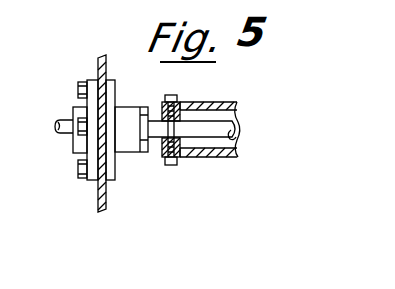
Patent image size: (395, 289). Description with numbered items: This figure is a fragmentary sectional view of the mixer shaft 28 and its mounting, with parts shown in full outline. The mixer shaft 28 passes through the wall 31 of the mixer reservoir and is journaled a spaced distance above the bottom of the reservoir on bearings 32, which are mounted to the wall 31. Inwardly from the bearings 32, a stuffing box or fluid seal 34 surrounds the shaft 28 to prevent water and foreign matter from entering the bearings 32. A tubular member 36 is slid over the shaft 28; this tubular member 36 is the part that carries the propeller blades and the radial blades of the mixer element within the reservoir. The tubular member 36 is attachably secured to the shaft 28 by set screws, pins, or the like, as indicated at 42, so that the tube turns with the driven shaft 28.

The mixer shaft 28 is at (237, 138).
The wall 31 is at (100, 200).
The bearings 32 is at (77, 105).
The stuffing box or fluid seal 34 is at (128, 150).
The tubular member 36 is at (238, 106).
The set screws, pins, or the like 42 is at (181, 96).